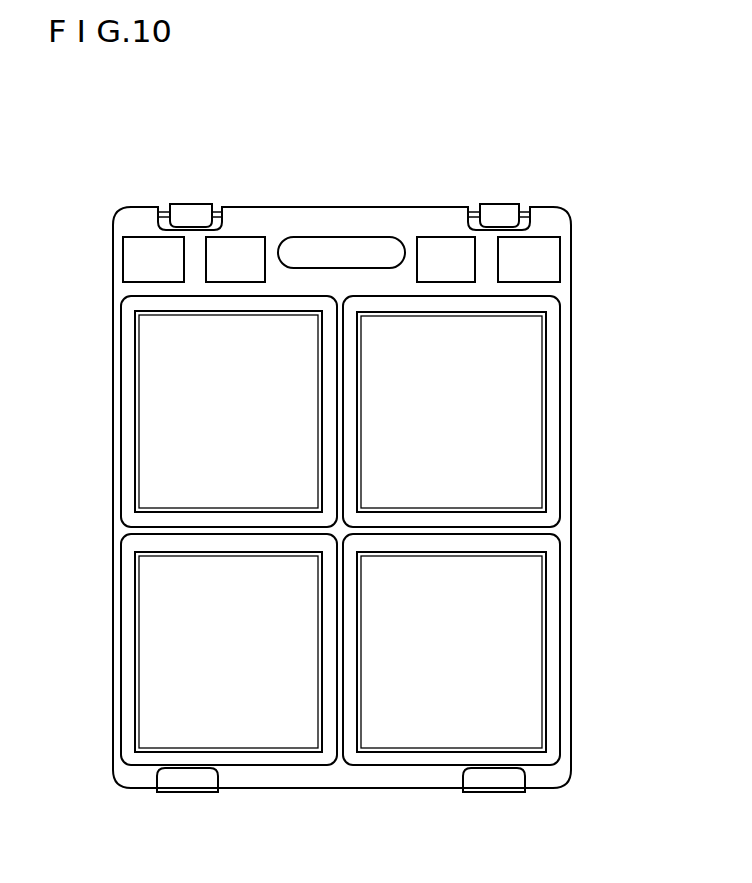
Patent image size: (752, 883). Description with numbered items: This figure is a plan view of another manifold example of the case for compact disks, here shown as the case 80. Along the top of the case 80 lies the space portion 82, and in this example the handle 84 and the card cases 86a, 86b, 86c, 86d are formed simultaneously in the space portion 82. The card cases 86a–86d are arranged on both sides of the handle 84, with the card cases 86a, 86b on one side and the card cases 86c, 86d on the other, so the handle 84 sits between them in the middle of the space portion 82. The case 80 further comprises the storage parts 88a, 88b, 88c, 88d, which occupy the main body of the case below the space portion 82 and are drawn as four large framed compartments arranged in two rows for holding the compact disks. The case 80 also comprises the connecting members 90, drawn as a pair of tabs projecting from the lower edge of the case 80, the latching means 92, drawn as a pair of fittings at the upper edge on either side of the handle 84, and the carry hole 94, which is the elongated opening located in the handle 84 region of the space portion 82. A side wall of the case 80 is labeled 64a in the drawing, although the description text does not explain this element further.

The case 80 is at (333, 118).
The space portion 82 is at (300, 220).
The handle 84 is at (338, 205).
The card case 86a is at (142, 248).
The card case 86b is at (238, 248).
The card case 86c is at (443, 248).
The card case 86d is at (536, 250).
The storage part 88a is at (528, 430).
The storage part 88b is at (520, 650).
The storage part 88c is at (152, 417).
The storage part 88d is at (152, 658).
The connecting member 90 is at (195, 778).
The latching means 92 is at (182, 221).
The carry hole 94 is at (360, 252).
The side wall 64a is at (566, 362).